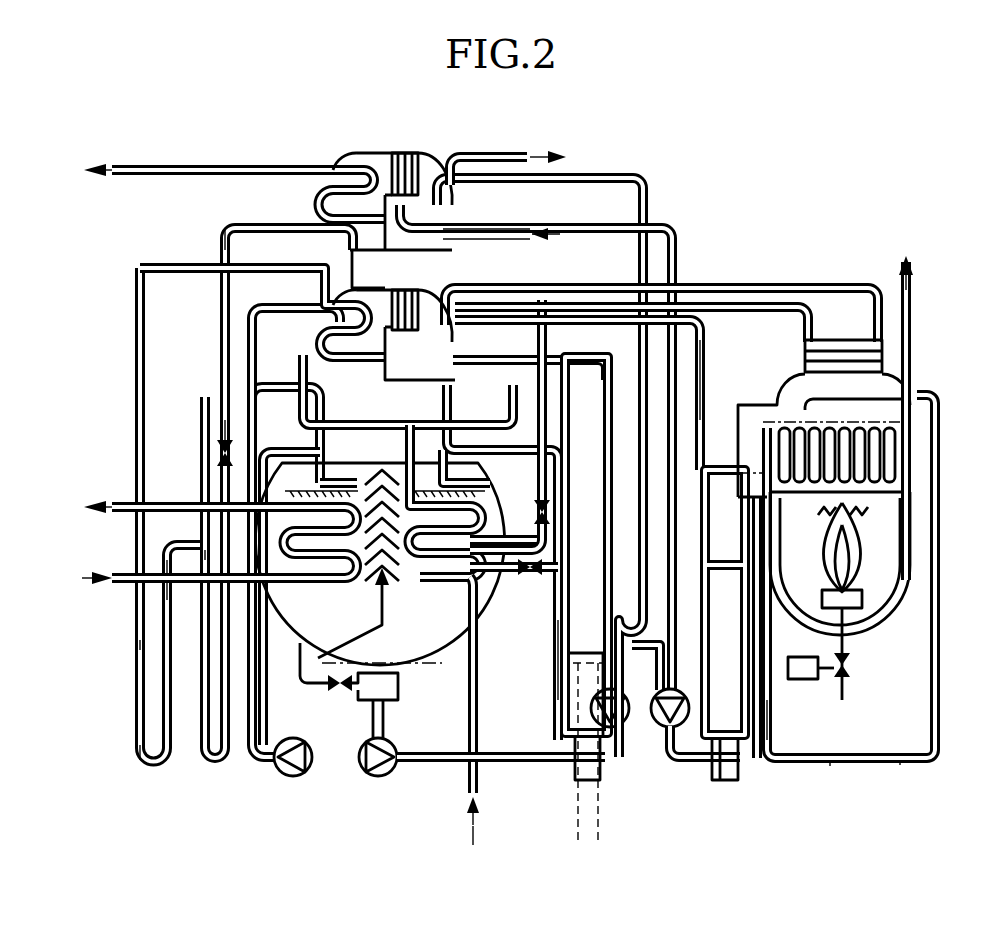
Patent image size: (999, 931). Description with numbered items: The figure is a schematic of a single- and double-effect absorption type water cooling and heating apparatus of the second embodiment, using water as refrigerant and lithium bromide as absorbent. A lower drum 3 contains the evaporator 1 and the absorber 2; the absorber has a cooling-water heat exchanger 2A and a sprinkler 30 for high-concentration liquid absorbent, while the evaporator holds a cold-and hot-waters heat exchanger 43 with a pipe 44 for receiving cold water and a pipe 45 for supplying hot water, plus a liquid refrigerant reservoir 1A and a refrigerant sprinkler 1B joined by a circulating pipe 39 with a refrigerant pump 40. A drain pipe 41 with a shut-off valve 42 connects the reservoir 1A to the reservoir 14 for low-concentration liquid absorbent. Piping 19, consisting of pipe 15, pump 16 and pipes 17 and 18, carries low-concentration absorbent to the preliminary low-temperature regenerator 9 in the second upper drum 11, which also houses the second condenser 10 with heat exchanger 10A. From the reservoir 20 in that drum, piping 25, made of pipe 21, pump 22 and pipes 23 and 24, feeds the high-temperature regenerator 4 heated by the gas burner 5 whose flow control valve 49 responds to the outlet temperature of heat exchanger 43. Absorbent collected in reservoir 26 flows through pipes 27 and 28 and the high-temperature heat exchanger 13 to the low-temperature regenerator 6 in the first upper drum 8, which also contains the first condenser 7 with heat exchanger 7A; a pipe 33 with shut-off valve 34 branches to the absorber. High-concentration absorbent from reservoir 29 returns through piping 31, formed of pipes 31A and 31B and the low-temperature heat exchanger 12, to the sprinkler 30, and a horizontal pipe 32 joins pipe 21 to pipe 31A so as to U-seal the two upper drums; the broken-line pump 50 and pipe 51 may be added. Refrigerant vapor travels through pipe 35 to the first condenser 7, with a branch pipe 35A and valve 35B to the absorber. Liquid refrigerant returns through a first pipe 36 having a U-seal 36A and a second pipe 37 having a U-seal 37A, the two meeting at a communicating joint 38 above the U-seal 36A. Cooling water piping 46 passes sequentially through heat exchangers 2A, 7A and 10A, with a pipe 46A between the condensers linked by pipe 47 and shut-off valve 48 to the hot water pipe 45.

The evaporator 1 is at (280, 526).
The liquid refrigerant reservoir 1A is at (300, 571).
The refrigerant sprinkler 1B is at (282, 471).
The absorber 2 is at (490, 581).
The heat exchanger of the absorber 2A is at (455, 601).
The lower drum 3 is at (340, 464).
The high-temperature regenerator 4 is at (915, 463).
The gas burner 5 is at (862, 599).
The low-temperature regenerator 6 is at (430, 306).
The first condenser 7 is at (150, 266).
The heat exchanger of the first condenser 7A is at (300, 331).
The first upper drum 8 is at (335, 251).
The preliminary low-temperature regenerator 9 is at (428, 166).
The second condenser 10 is at (358, 161).
The heat exchanger of the second condenser 10A is at (325, 181).
The second upper drum 11 is at (398, 157).
The low-temperature heat exchanger 12 is at (565, 771).
The high-temperature heat exchanger 13 is at (745, 766).
The reservoir for low-concentration liquid absorbent 14 is at (432, 766).
The pipe for low-concentration liquid absorbent 15 is at (372, 781).
The pump for low-concentration liquid absorbent 16 is at (370, 761).
The pipe for low-concentration liquid absorbent 17 is at (488, 811).
The pipe for low-concentration liquid absorbent 18 is at (648, 181).
The piping for low-concentration liquid absorbent 19 is at (648, 791).
The reservoir for intermediate-concentration liquid absorbent 20 is at (475, 216).
The pipe for intermediate-concentration liquid absorbent 21 is at (690, 231).
The pump for intermediate-concentration liquid absorbent 22 is at (668, 731).
The pipe for intermediate-concentration liquid absorbent 23 is at (695, 766).
The pipe for intermediate-concentration liquid absorbent 24 is at (910, 766).
The piping for intermediate-concentration liquid absorbent 25 is at (830, 769).
The reservoir for intermediate-concentration liquid absorbent 26 is at (730, 471).
The pipe for intermediate-concentration liquid absorbent 27 is at (768, 701).
The pipe for intermediate-concentration liquid absorbent 28 is at (712, 318).
The reservoir for high-concentration liquid absorbent 29 is at (420, 331).
The sprinkler for high-concentration liquid absorbent 30 is at (488, 441).
The piping for high-concentration liquid absorbent 31 is at (705, 339).
The pipe for high-concentration liquid absorbent 31A is at (582, 311).
The pipe for high-concentration liquid absorbent 31B is at (556, 741).
The horizontal pipe for liquid absorbent 32 is at (600, 761).
The pipe for intermediate-concentration liquid absorbent 33 is at (727, 581).
The shut-off valve 34 is at (530, 586).
The pipe for refrigerant 35 is at (805, 289).
The pipe for refrigerant vapor 35A is at (570, 331).
The shut-off valve 35B is at (548, 506).
The first pipe for liquid refrigerant 36 is at (280, 348).
The U-seal 36A is at (205, 763).
The second pipe for liquid refrigerant 37 is at (138, 382).
The U-seal 37A is at (148, 753).
The communicating joint 38 is at (183, 542).
The pipe for circulating liquid refrigerant 39 is at (213, 776).
The pump for refrigerant 40 is at (262, 771).
The drain pipe for liquid refrigerant 41 is at (298, 779).
The shut-off valve 42 is at (340, 701).
The cold-and hot-waters heat exchanger 43 is at (300, 576).
The pipe for receiving cold water 44 is at (110, 583).
The pipe for supplying hot water 45 is at (112, 501).
The piping for cooling water 46 is at (462, 761).
The pipe for cooling water 46A is at (228, 246).
The pipe for cooling water 47 is at (222, 429).
The shut-off valve 48 is at (218, 456).
The flow control valve 49 is at (825, 681).
The pump for high-concentration liquid absorbent 50 is at (596, 806).
The pipe for liquid absorbent 51 is at (600, 746).